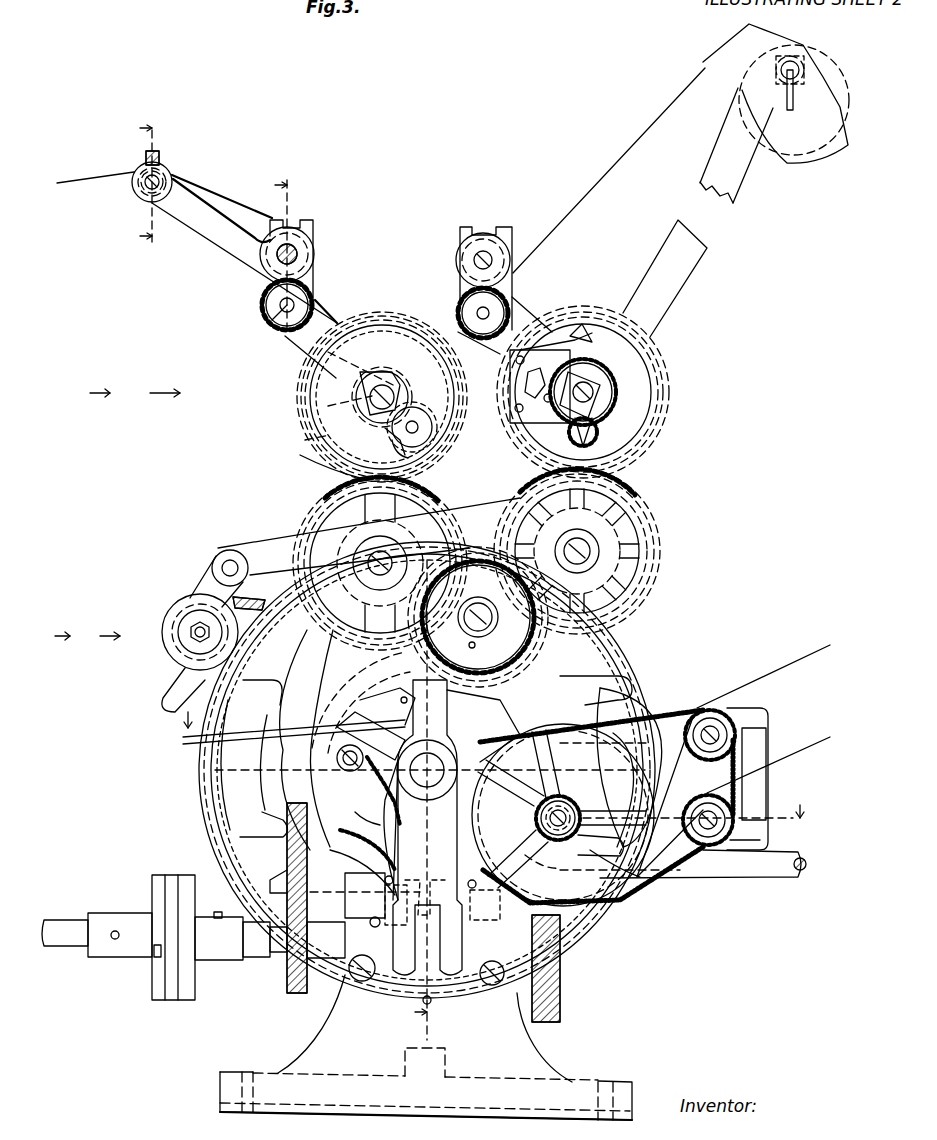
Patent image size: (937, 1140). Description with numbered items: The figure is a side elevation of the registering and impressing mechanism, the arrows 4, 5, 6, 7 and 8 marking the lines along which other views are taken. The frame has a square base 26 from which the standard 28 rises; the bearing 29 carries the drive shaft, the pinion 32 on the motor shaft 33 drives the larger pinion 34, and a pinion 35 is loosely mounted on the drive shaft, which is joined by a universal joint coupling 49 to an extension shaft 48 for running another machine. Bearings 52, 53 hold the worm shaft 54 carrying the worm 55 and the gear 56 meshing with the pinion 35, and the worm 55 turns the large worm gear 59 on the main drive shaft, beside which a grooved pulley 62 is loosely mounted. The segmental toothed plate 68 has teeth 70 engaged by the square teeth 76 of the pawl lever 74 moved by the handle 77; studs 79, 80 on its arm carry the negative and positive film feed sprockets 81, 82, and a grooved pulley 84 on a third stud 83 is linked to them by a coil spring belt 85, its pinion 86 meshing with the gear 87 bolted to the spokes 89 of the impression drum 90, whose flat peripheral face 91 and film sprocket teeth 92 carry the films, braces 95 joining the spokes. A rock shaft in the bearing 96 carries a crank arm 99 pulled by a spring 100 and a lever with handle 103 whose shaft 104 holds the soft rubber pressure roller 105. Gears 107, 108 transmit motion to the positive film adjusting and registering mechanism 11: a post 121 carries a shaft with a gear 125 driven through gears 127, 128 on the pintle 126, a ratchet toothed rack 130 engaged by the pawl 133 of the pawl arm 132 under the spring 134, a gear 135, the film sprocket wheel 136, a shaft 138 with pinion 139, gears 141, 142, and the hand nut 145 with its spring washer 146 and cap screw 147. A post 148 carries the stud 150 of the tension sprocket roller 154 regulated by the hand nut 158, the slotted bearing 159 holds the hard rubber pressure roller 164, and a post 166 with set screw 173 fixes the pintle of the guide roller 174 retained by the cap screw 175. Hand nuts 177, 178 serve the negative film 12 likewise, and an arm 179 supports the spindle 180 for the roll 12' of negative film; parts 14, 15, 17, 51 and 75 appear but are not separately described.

The section line 4 is at (135, 394).
The section line 5 is at (484, 772).
The section line 6 is at (148, 184).
The section line 7 is at (358, 600).
The section line 8 is at (87, 636).
The positive film adjusting and registering mechanism 11 is at (300, 378).
The negative film 12 is at (572, 405).
The roll of negative film 12' is at (681, 148).
The pulley 14 is at (470, 252).
The toothed pulley 15 is at (460, 310).
The wheel rim 17 is at (618, 928).
The base 26 is at (300, 1118).
The standard 28 is at (320, 1035).
The bearing 29 is at (255, 975).
The pinion 32 is at (630, 888).
The motor shaft 33 is at (725, 878).
The larger pinion 34 is at (560, 985).
The pinion 35 is at (307, 932).
The extension shaft 48 is at (55, 946).
The universal joint coupling 49 is at (105, 957).
The screw 51 is at (358, 982).
The bearing 52 is at (365, 891).
The bearing 53 is at (532, 857).
The worm shaft 54 is at (380, 898).
The worm 55 is at (400, 928).
The gear 56 is at (295, 1000).
The worm gear 59 is at (360, 862).
The grooved pulley 62 is at (298, 670).
The segmental toothed plate 68 is at (372, 790).
The teeth 70 is at (372, 822).
The pawl lever 74 is at (352, 782).
The pivot 75 is at (340, 745).
The square teeth 76 is at (355, 823).
The handle 77 is at (185, 745).
The stud 79 is at (670, 797).
The stud 80 is at (700, 805).
The negative film feed sprocket 81 is at (727, 745).
The positive film feed sprocket 82 is at (758, 840).
The third stud 83 is at (562, 795).
The grooved pulley 84 is at (610, 760).
The coil spring belt 85 is at (668, 708).
The pinion 86 is at (535, 790).
The gear 87 is at (380, 685).
The spokes 89 is at (430, 780).
The impression drum 90 is at (635, 650).
The flat peripheral face 91 is at (200, 788).
The film sprocket teeth 92 is at (205, 802).
The braces 95 is at (262, 768).
The bearing 96 is at (232, 540).
The crank arm 99 is at (212, 572).
The spring 100 is at (266, 590).
The handle 103 is at (172, 690).
The shaft 104 is at (178, 628).
The soft rubber pressure roller 105 is at (175, 600).
The gear 107 is at (410, 656).
The gear 108 is at (468, 628).
The post 121 is at (294, 443).
The gear 125 is at (302, 455).
The pintle 126 is at (350, 552).
The gear 127 is at (325, 497).
The gear 128 is at (440, 505).
The ratchet toothed rack 130 is at (545, 343).
The pawl arm 132 is at (590, 345).
The pawl 133 is at (512, 378).
The spring 134 is at (515, 406).
The gear 135 is at (552, 408).
The film sprocket wheel 136 is at (312, 418).
The shaft 138 is at (398, 452).
The pinion 139 is at (578, 432).
The gear 141 is at (418, 412).
The gear 142 is at (392, 433).
The hand nut 145 is at (375, 370).
The spring washer 146 is at (388, 378).
The cap screw 147 is at (395, 385).
The post 148 is at (298, 346).
The stud 150 is at (266, 314).
The tension sprocket roller 154 is at (310, 300).
The hand nut 158 is at (316, 304).
The slotted bearing 159 is at (290, 215).
The hard rubber pressure roller 164 is at (314, 246).
The post 166 is at (208, 255).
The set screw 173 is at (160, 150).
The guide roller 174 is at (170, 175).
The cap screw 175 is at (163, 179).
The hand nut 177 is at (512, 300).
The hand nut 178 is at (595, 390).
The arm 179 is at (690, 285).
The spindle 180 is at (803, 68).